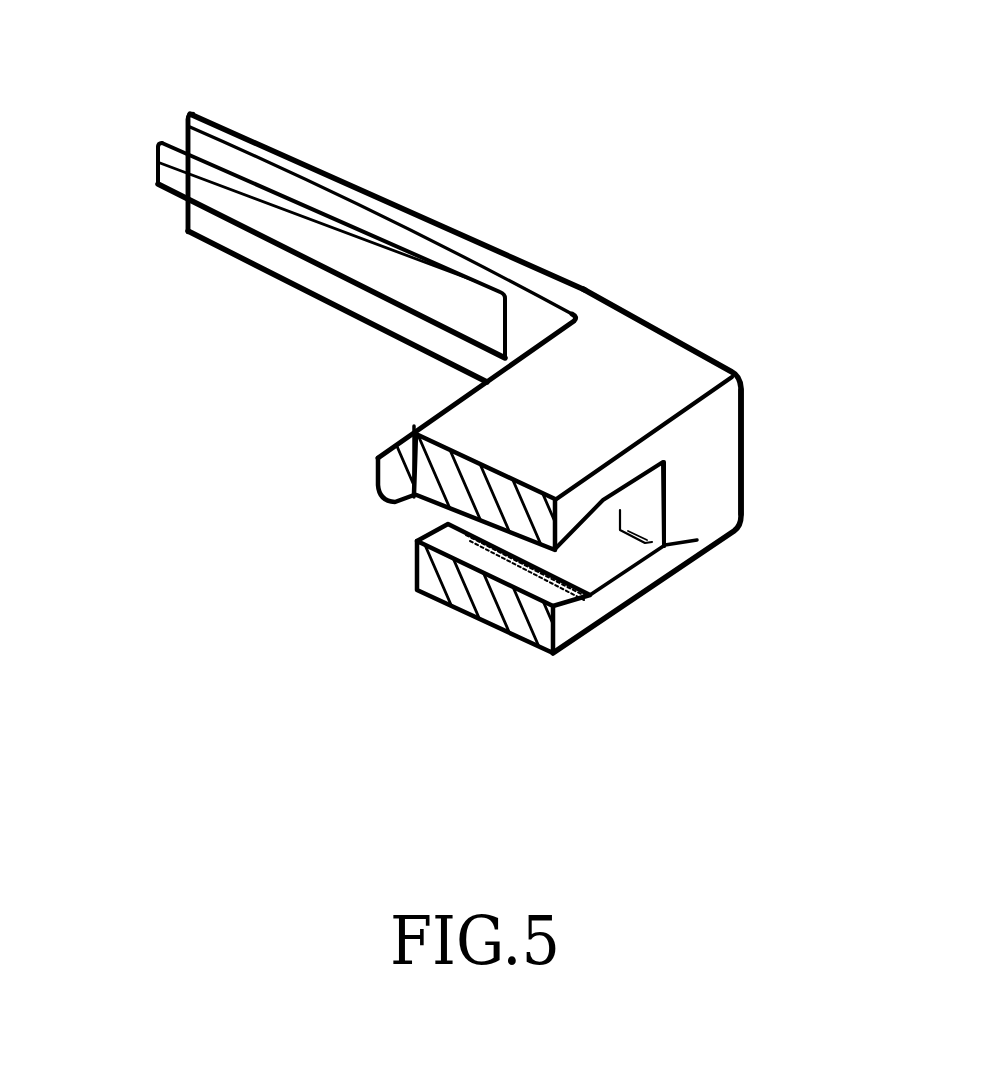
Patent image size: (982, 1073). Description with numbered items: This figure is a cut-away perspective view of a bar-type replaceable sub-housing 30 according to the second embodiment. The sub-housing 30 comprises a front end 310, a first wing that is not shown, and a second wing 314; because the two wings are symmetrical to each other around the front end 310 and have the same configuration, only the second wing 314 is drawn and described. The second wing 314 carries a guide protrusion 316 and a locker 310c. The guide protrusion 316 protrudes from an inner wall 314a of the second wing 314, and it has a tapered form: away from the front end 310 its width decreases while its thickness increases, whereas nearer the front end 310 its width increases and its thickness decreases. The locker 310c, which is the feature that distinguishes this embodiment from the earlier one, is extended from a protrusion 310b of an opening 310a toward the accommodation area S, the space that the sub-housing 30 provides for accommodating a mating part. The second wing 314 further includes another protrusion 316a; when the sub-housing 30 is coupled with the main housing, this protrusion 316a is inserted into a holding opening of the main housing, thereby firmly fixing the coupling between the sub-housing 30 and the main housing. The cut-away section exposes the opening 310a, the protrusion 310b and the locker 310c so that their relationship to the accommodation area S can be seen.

The bar-type replaceable sub-housing 30 is at (400, 414).
The front end 310 is at (585, 410).
The opening 310a is at (697, 540).
The protrusion of the opening 310b is at (558, 550).
The locker 310c is at (397, 500).
The second wing 314 is at (434, 242).
The inner wall of the second wing 314a is at (248, 163).
The guide protrusion 316 is at (322, 243).
The protrusion 316a is at (160, 163).
The accommodation area S is at (415, 375).